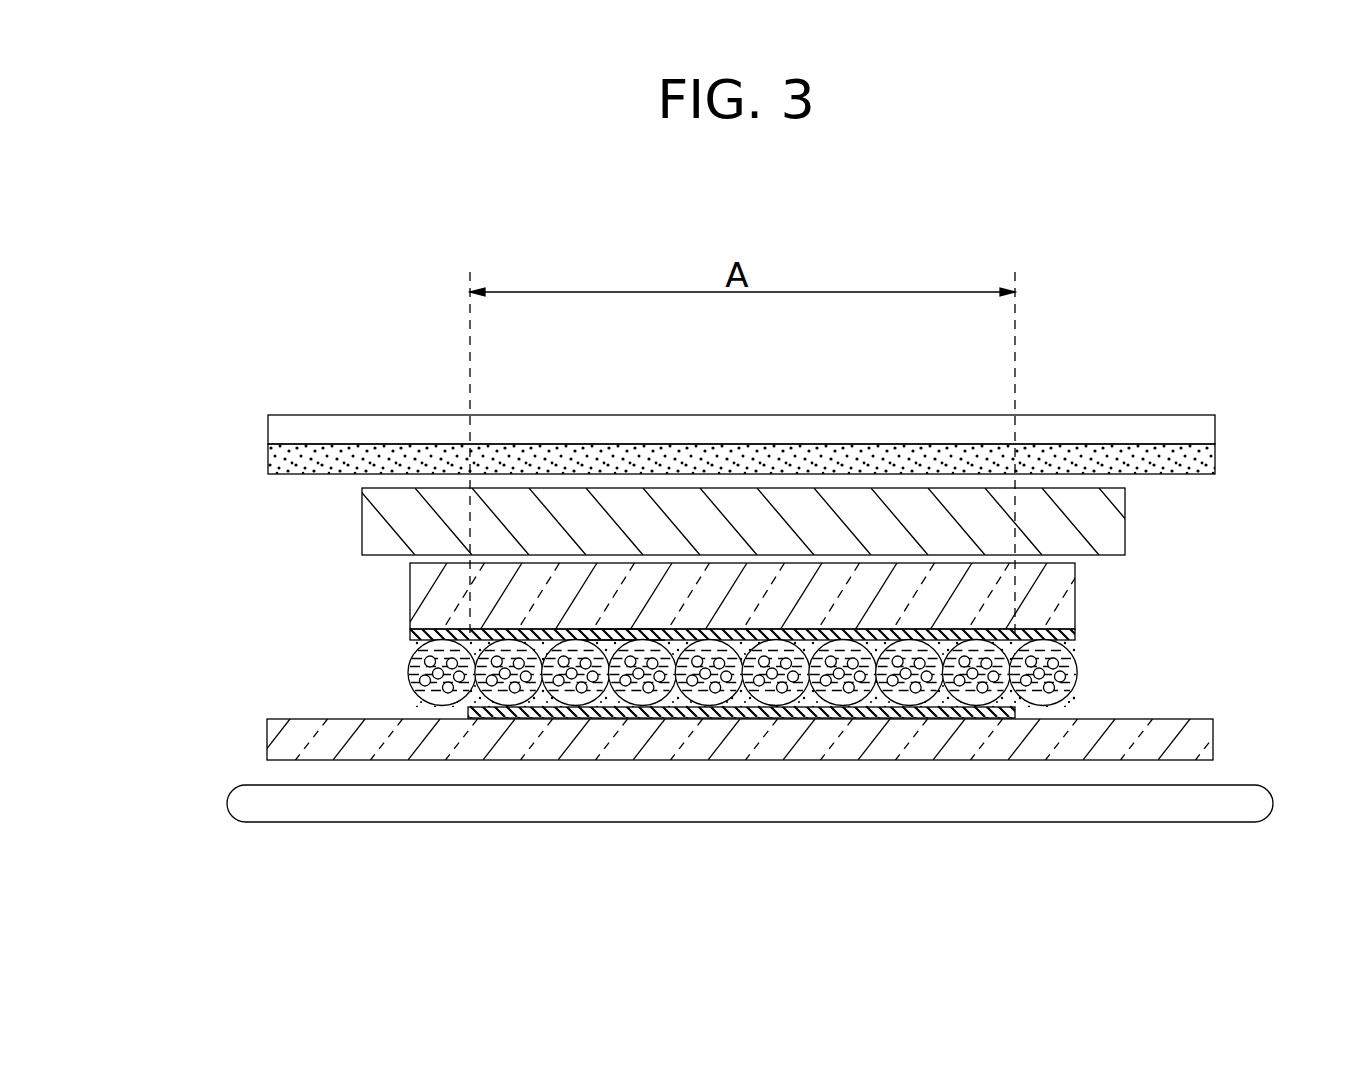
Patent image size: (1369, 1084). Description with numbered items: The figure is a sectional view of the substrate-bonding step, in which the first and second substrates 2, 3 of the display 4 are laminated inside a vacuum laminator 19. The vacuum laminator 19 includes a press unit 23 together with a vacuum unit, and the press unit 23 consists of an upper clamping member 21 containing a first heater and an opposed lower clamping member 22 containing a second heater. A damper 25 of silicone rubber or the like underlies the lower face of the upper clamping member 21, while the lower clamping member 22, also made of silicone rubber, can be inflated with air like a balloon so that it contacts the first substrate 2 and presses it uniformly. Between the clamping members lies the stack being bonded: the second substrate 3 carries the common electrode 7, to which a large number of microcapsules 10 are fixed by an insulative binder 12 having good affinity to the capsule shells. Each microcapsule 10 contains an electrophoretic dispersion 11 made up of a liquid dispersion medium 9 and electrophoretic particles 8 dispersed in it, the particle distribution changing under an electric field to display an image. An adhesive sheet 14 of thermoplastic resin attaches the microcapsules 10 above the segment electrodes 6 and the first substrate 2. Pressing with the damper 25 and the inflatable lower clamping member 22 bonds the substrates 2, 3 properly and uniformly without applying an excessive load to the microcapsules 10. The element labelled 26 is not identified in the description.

The first substrate 2 is at (1195, 735).
The second substrate 3 is at (978, 590).
The display 4 is at (1158, 626).
The segment electrodes 6 is at (887, 715).
The common electrode 7 is at (888, 630).
The electrophoretic particles 8 is at (1035, 698).
The liquid dispersion medium 9 is at (1050, 690).
The microcapsules 10 is at (1090, 679).
The electrophoretic dispersion 11 is at (1026, 706).
The binder 12 is at (623, 632).
The adhesive sheet 14 is at (667, 703).
The vacuum laminator 19 is at (378, 410).
The upper clamping member 21 is at (285, 428).
The lower clamping member 22 is at (238, 800).
The press unit 23 is at (137, 421).
The damper 25 is at (268, 474).
The liquid crystal panel body 26 is at (1097, 519).